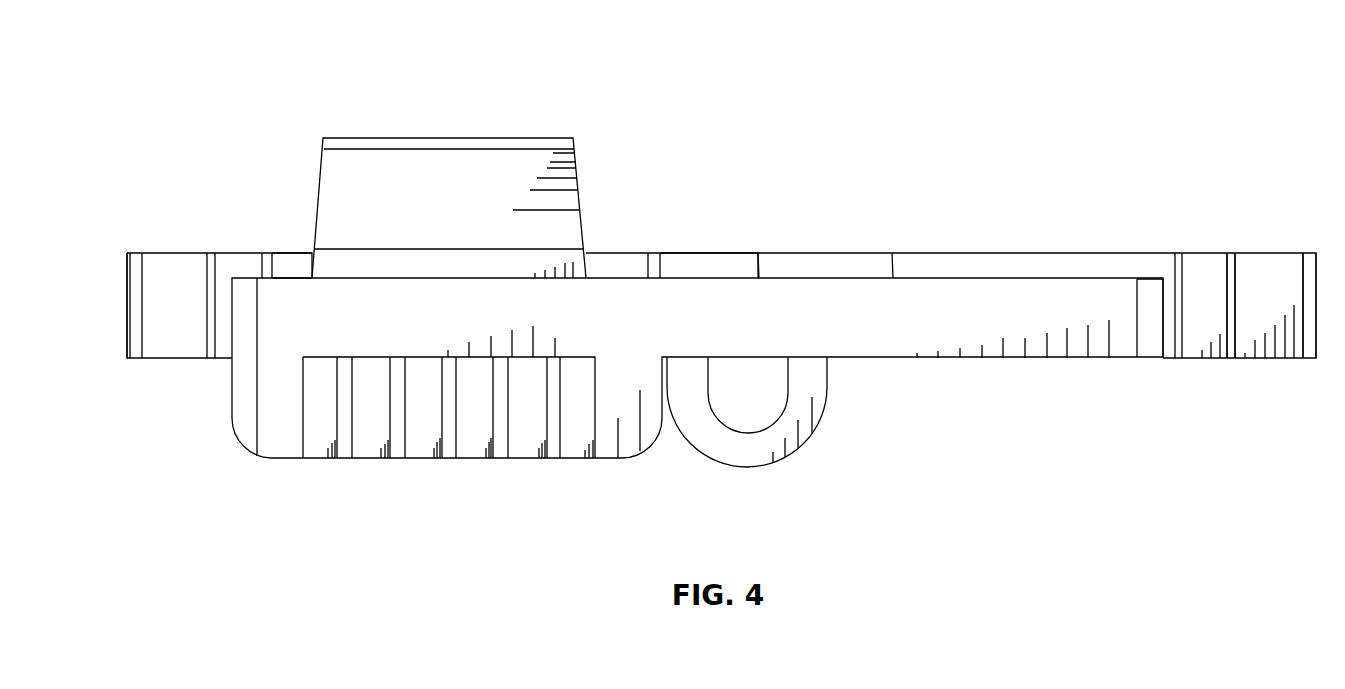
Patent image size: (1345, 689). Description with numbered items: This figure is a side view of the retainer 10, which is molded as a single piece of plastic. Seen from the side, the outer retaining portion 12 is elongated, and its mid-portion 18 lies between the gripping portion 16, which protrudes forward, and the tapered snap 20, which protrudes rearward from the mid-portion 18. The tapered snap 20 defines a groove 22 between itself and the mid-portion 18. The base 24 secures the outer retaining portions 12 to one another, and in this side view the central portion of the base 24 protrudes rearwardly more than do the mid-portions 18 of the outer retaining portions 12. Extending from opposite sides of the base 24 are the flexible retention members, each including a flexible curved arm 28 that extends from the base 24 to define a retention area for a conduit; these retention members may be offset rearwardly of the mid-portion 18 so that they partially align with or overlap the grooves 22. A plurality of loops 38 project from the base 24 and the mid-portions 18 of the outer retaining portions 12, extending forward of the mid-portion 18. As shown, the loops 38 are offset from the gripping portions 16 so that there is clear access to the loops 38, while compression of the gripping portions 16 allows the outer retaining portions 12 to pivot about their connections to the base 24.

The retainer 10 is at (1255, 46).
The outer retaining portion 12 is at (1077, 358).
The gripping portion 16 is at (450, 458).
The mid-portion 18 is at (1080, 279).
The tapered snap 20 is at (320, 160).
The groove 22 is at (312, 272).
The base 24 is at (728, 253).
The flexible curved arm 28 is at (605, 253).
The loop 38 is at (747, 467).